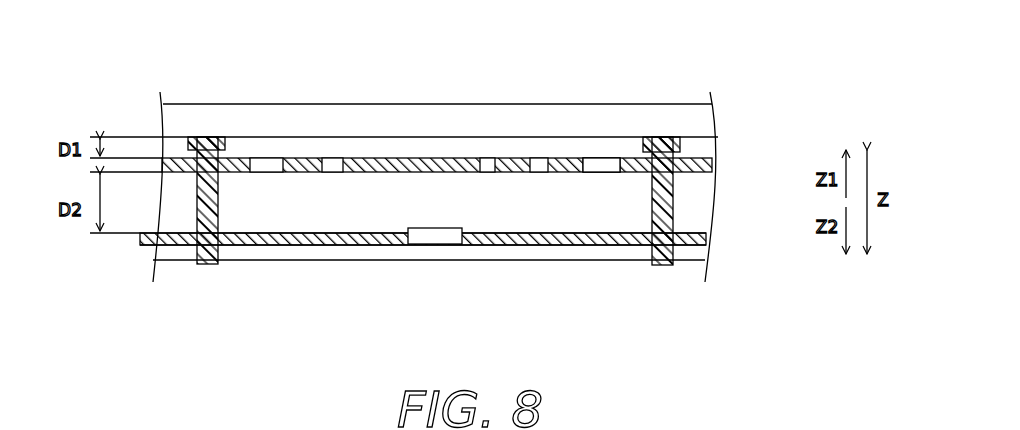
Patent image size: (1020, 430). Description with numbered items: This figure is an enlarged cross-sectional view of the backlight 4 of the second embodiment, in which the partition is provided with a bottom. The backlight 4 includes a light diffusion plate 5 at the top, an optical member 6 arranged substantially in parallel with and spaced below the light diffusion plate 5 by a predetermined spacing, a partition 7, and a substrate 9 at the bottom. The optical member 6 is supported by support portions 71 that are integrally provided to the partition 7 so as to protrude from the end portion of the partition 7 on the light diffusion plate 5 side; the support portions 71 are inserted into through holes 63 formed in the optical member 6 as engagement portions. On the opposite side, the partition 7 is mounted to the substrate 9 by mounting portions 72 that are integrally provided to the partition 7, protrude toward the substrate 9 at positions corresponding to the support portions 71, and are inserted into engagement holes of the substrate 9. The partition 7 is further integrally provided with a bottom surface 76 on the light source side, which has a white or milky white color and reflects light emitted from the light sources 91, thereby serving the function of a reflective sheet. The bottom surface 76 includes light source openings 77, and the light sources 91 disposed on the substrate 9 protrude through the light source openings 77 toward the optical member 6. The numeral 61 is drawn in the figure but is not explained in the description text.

The backlight 4 is at (711, 65).
The light diffusion plate 5 is at (708, 127).
The optical member 6 is at (705, 164).
The partition 7 is at (688, 205).
The substrate 9 is at (700, 253).
The electrode 61 is at (593, 158).
The through hole 63 is at (215, 150).
The support portion 71 is at (184, 150).
The mounting portion 72 is at (199, 254).
The bottom surface 76 is at (305, 224).
The light source opening 77 is at (408, 240).
The light source 91 is at (445, 240).